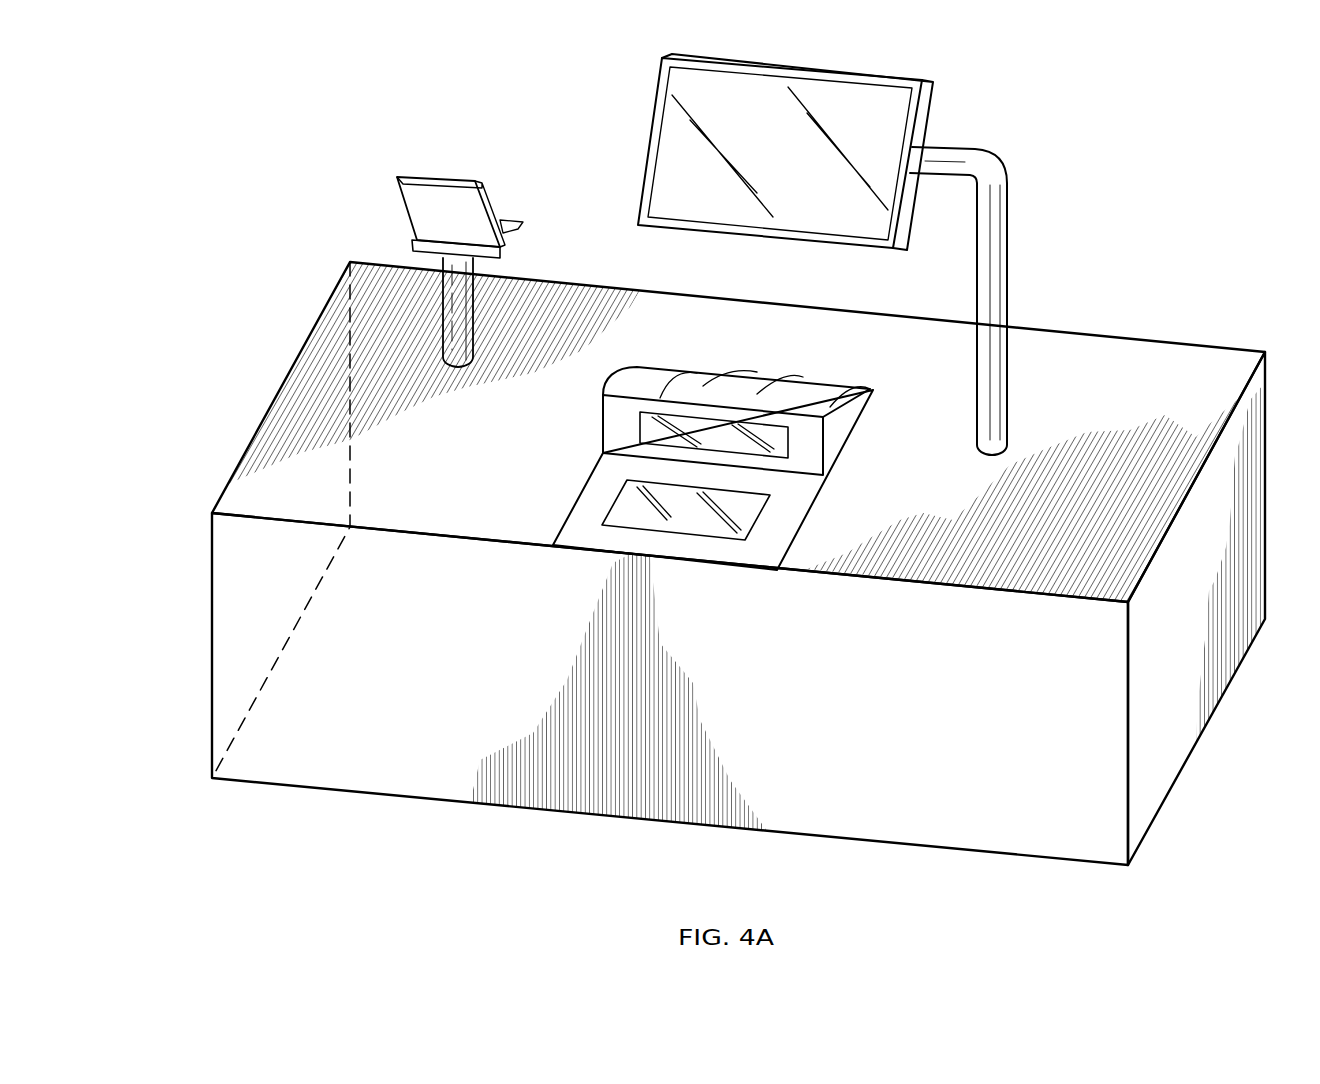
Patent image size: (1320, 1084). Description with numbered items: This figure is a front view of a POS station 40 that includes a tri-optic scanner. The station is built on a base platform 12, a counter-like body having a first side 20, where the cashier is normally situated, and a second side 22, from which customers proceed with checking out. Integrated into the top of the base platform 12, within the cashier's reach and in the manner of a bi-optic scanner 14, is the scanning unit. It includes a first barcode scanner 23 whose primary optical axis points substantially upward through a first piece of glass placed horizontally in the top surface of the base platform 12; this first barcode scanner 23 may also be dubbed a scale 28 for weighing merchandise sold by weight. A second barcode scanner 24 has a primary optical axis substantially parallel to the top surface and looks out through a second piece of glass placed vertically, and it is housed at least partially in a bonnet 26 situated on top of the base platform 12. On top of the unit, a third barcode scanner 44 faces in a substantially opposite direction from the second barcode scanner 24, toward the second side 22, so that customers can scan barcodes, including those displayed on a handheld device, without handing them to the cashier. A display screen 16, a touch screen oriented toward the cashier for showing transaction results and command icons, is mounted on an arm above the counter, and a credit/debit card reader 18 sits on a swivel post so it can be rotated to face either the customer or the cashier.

The POS station 40 is at (1189, 131).
The base platform 12 is at (281, 505).
The bi-optic scanner 14 is at (577, 496).
The display screen 16 is at (678, 148).
The credit/debit card reader 18 is at (403, 217).
The first side 20 is at (392, 738).
The second side 22 is at (1063, 402).
The first barcode scanner 23 is at (693, 523).
The second barcode scanner 24 is at (650, 432).
The bonnet 26 is at (843, 427).
The scale 28 is at (787, 520).
The third barcode scanner 44 is at (700, 388).